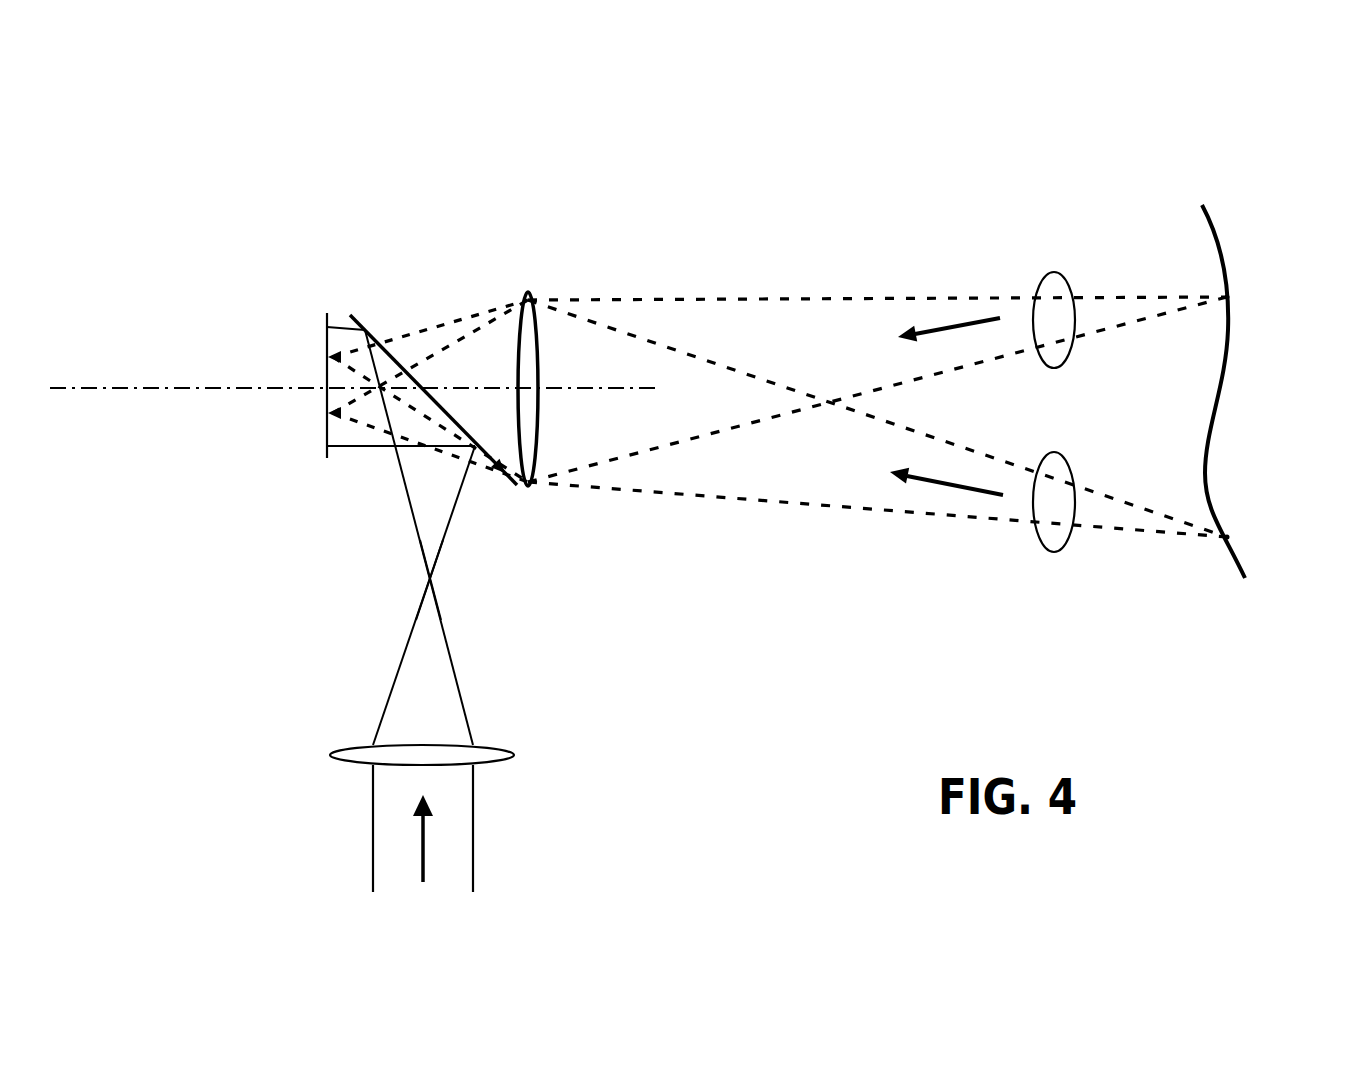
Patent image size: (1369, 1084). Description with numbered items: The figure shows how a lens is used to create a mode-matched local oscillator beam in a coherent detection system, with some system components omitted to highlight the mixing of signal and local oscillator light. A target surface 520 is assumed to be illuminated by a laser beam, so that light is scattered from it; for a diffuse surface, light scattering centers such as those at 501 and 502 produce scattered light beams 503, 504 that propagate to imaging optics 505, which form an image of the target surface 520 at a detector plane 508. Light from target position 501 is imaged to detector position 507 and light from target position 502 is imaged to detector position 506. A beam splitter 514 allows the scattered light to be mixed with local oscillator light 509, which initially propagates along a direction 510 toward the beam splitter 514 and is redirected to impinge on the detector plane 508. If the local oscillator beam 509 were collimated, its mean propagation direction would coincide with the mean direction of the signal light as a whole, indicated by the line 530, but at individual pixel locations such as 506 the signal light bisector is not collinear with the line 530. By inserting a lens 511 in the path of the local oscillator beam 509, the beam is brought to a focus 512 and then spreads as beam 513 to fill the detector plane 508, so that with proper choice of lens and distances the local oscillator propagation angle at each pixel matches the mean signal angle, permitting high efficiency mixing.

The light scattering center 501 is at (1227, 297).
The light scattering center 502 is at (1227, 537).
The scattered light beam 503 is at (1058, 272).
The scattered light beam 504 is at (1063, 452).
The imaging optics 505 is at (528, 297).
The detector position 506 is at (328, 357).
The detector position 507 is at (328, 415).
The detector plane 508 is at (327, 315).
The local oscillator beam 509 is at (477, 808).
The propagation direction 510 is at (420, 835).
The lens 511 is at (338, 750).
The focus 512 is at (450, 573).
The beam 513 is at (415, 515).
The beam splitter 514 is at (362, 320).
The target surface 520 is at (1212, 218).
The line 530 is at (140, 385).